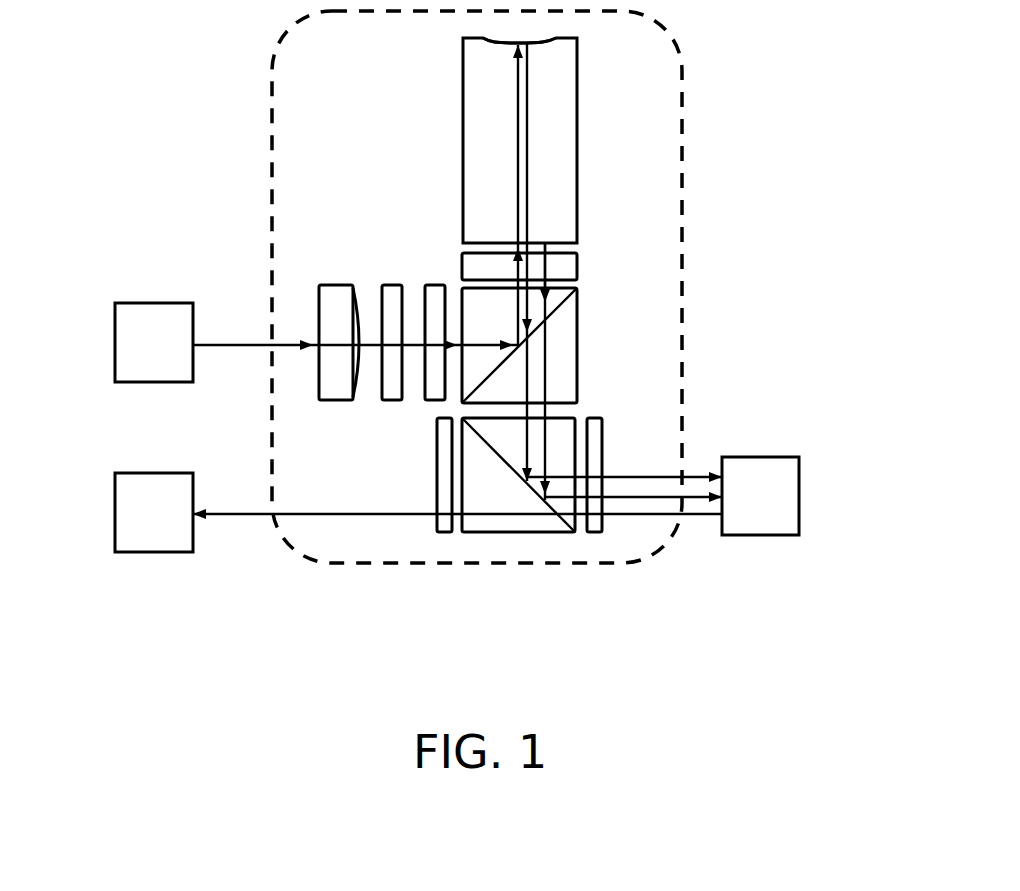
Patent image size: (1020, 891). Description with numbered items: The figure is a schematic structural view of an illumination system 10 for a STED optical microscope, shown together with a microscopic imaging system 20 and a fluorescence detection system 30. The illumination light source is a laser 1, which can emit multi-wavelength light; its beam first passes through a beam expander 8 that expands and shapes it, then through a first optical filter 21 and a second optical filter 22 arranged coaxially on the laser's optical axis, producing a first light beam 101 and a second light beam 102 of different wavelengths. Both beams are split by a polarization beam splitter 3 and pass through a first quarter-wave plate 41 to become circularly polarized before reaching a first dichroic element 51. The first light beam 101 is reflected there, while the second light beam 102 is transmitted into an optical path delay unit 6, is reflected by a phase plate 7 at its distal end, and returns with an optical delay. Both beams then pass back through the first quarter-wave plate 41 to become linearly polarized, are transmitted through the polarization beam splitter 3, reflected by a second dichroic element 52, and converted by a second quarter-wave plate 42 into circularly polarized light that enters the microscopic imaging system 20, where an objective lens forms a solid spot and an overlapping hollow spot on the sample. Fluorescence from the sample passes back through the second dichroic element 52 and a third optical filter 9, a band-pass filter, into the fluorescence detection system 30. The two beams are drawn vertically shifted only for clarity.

The laser 1 is at (114, 350).
The illumination system 10 is at (247, 178).
The beam expander 8 is at (338, 285).
The first optical filter 21 is at (392, 285).
The second optical filter 22 is at (437, 285).
The polarization beam splitter 3 is at (565, 300).
The first quarter-wave plate 41 is at (578, 265).
The optical path delay unit 6 is at (577, 82).
The phase plate 7 is at (495, 40).
The first dichroic element 51 is at (533, 243).
The first light beam 101 is at (548, 362).
The second light beam 102 is at (512, 90).
The third optical filter 9 is at (437, 445).
The second dichroic element 52 is at (515, 470).
The second quarter-wave plate 42 is at (590, 532).
The microscopic imaging system 20 is at (813, 490).
The fluorescence detection system 30 is at (105, 517).